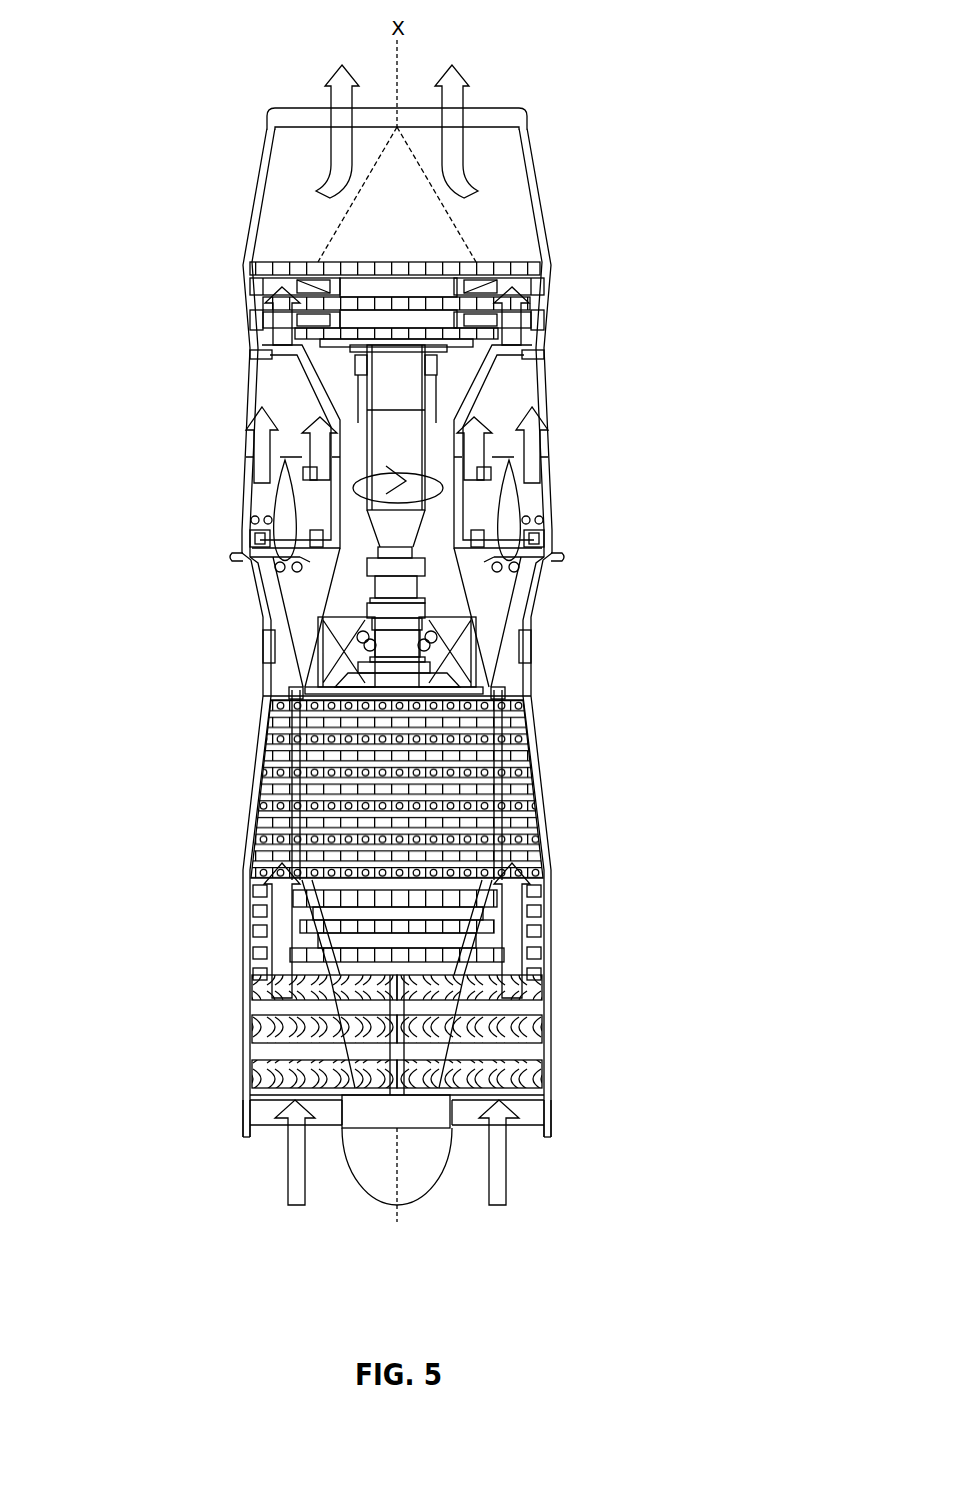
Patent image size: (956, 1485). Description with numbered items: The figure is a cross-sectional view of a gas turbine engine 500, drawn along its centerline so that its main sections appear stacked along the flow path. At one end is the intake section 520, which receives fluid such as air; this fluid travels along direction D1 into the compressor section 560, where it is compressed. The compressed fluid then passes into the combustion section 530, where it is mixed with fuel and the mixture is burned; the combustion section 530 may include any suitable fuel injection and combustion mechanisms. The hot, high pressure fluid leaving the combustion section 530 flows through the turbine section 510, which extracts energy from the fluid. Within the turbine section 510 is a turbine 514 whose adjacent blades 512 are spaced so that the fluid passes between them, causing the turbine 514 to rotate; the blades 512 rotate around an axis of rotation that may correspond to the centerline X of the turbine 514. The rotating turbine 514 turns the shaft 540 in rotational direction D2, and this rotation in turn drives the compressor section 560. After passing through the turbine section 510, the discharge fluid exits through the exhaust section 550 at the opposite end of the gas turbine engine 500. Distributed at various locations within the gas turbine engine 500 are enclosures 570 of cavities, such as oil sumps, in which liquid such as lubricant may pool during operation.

The gas turbine engine 500 is at (617, 573).
The turbine section 510 is at (256, 290).
The blades 512 is at (368, 262).
The turbine 514 is at (411, 250).
The intake section 520 is at (531, 1145).
The combustion section 530 is at (277, 395).
The shaft 540 is at (400, 437).
The exhaust section 550 is at (311, 117).
The compressor section 560 is at (262, 844).
The enclosures 570 is at (478, 376).
The direction D1 is at (303, 1190).
The rotational direction D2 is at (398, 482).